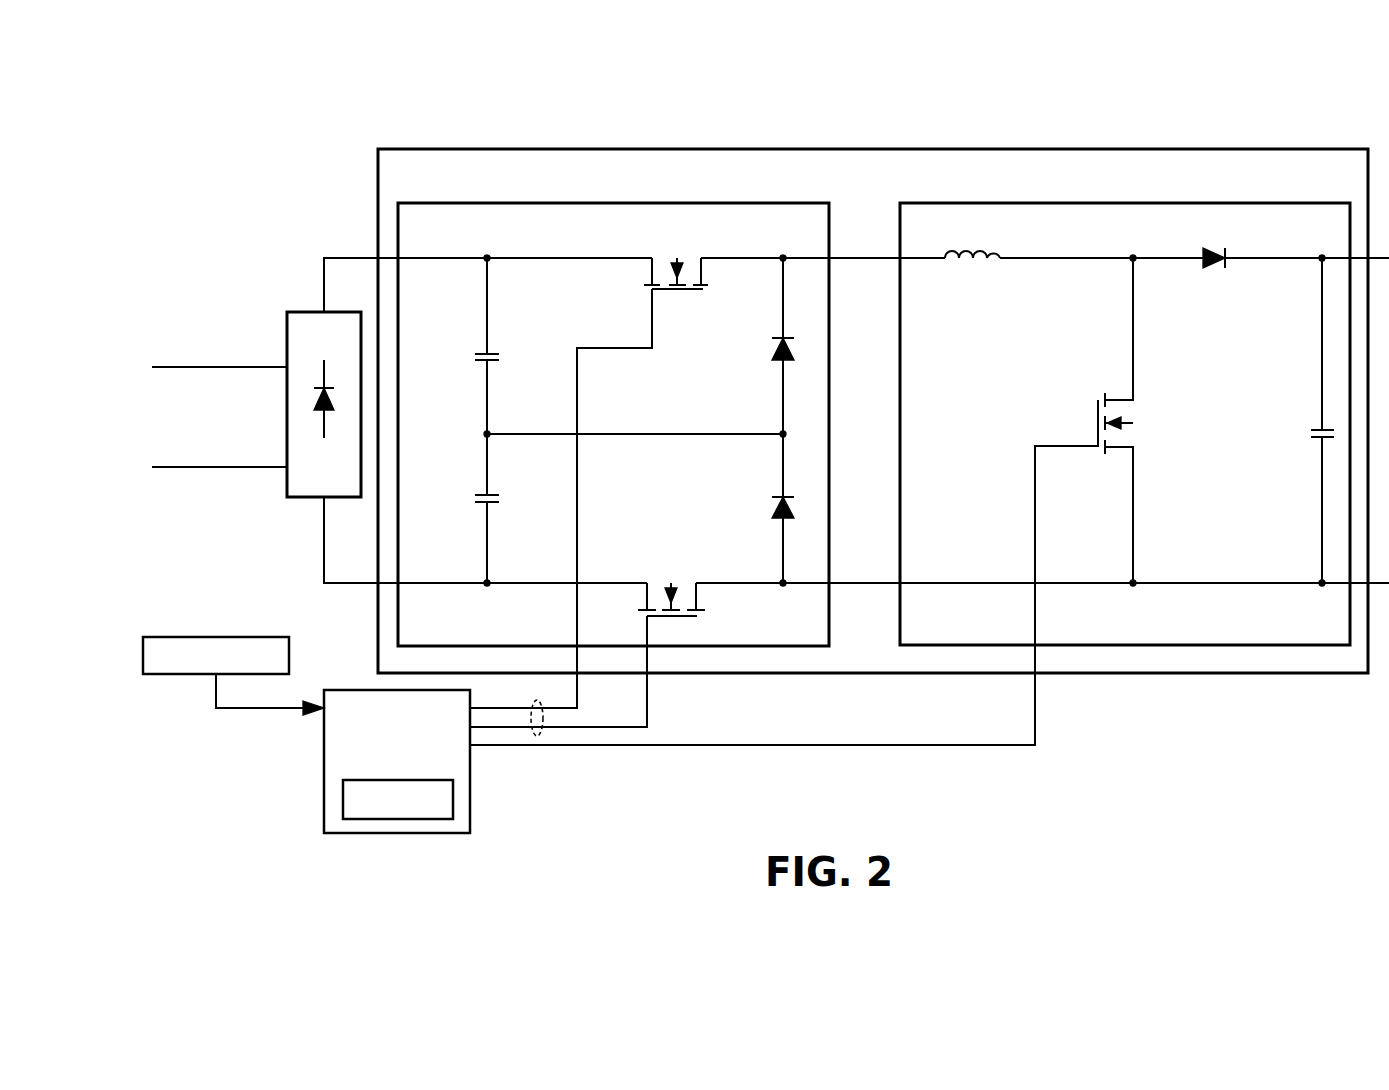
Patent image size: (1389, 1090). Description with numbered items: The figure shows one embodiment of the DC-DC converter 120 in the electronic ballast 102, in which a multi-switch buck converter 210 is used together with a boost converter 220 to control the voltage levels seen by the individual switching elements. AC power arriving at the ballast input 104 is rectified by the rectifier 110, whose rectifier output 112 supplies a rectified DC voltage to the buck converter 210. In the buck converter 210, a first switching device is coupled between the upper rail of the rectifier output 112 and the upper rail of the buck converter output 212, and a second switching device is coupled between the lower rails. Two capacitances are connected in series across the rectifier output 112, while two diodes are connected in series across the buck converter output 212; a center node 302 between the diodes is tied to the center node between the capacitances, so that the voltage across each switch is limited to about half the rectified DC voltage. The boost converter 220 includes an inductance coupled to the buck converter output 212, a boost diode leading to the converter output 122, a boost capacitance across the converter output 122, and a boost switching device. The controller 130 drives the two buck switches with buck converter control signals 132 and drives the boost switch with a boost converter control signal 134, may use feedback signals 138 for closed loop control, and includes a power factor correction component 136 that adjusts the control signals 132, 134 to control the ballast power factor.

The electronic ballast 102 is at (205, 110).
The ballast input 104 is at (172, 502).
The rectifier 110 is at (305, 312).
The rectifier output 112 is at (312, 252).
The DC-DC converter 120 is at (378, 178).
The converter output 122 is at (1388, 700).
The controller 130 is at (324, 728).
The buck converter control signals 132 is at (533, 760).
The boost converter control signal 134 is at (648, 747).
The power factor correction component 136 is at (343, 799).
The feedback signals 138 is at (213, 637).
The buck converter 210 is at (398, 224).
The buck converter output 212 is at (859, 635).
The boost converter 220 is at (900, 222).
The center node 302 is at (783, 433).